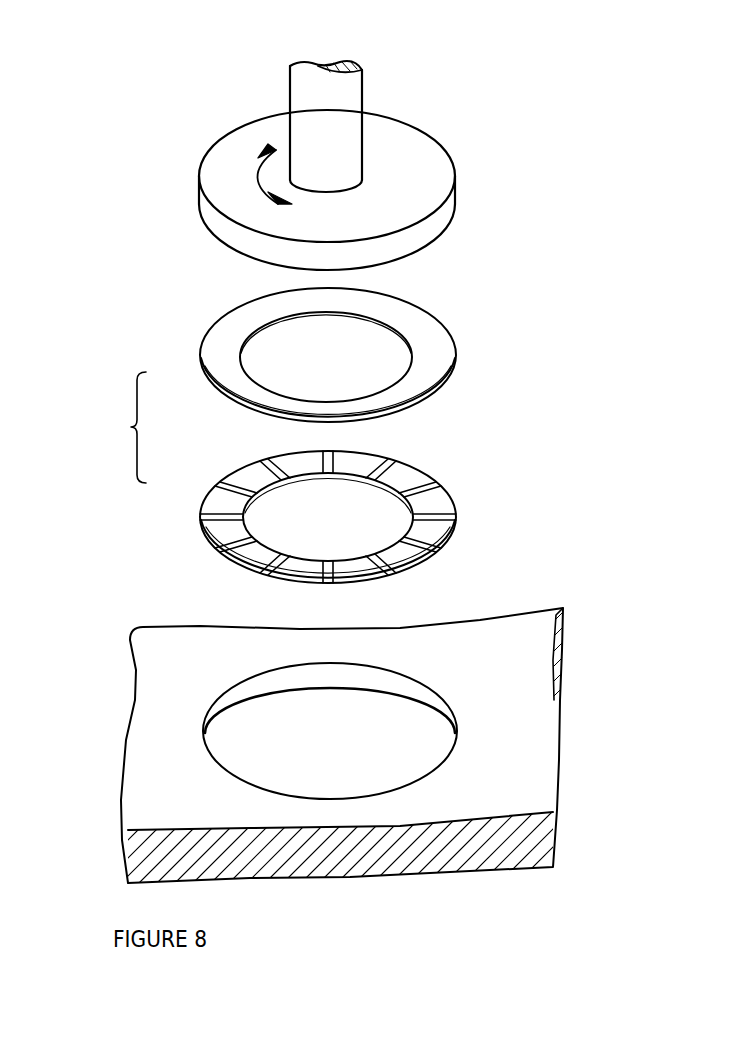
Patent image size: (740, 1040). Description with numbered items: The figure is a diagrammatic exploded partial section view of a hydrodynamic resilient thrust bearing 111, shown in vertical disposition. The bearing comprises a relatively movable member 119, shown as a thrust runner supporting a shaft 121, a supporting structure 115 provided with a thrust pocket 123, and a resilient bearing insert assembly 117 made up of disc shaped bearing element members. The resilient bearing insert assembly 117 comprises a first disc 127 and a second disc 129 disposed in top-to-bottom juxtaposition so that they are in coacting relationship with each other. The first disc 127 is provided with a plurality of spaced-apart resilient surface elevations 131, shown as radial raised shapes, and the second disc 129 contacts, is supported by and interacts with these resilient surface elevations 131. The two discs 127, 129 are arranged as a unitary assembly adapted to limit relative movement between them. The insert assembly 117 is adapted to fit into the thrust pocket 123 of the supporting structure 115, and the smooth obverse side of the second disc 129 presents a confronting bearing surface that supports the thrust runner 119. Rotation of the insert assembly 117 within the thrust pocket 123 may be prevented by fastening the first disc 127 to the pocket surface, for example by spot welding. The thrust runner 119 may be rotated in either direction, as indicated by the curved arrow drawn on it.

The hydrodynamic thrust bearing 111 is at (560, 235).
The supporting structure 115 is at (560, 745).
The resilient bearing insert assembly 117 is at (127, 427).
The relatively movable member 119 is at (443, 147).
The shaft 121 is at (362, 96).
The thrust pocket 123 is at (237, 682).
The first disc 127 is at (373, 521).
The second disc 129 is at (452, 348).
The resilient surface elevations 131 is at (443, 548).